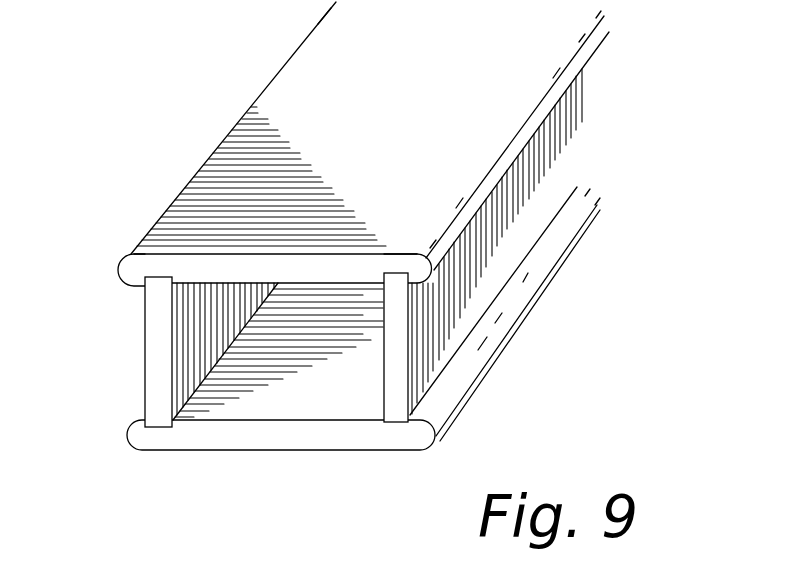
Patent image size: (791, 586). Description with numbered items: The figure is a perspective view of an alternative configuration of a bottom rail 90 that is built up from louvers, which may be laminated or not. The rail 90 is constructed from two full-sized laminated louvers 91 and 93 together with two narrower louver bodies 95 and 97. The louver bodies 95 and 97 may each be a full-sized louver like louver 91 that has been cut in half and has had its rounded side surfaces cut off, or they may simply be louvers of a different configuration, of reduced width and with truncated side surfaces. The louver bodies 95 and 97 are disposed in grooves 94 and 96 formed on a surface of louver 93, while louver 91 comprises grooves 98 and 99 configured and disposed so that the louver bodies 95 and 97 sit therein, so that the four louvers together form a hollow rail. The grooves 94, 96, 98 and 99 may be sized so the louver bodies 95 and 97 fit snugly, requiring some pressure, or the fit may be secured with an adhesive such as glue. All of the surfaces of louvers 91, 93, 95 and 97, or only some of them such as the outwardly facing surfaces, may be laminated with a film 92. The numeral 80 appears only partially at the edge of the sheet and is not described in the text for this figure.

The adjacent structure 80 is at (66, 0).
The rail 90 is at (587, 315).
The laminated louver 91 is at (343, 263).
The film 92 is at (297, 87).
The laminated louver 93 is at (287, 438).
The groove 94 is at (162, 427).
The laminated louver 95 is at (397, 373).
The groove 96 is at (395, 433).
The laminated louver 97 is at (155, 362).
The groove 98 is at (133, 254).
The groove 99 is at (410, 253).